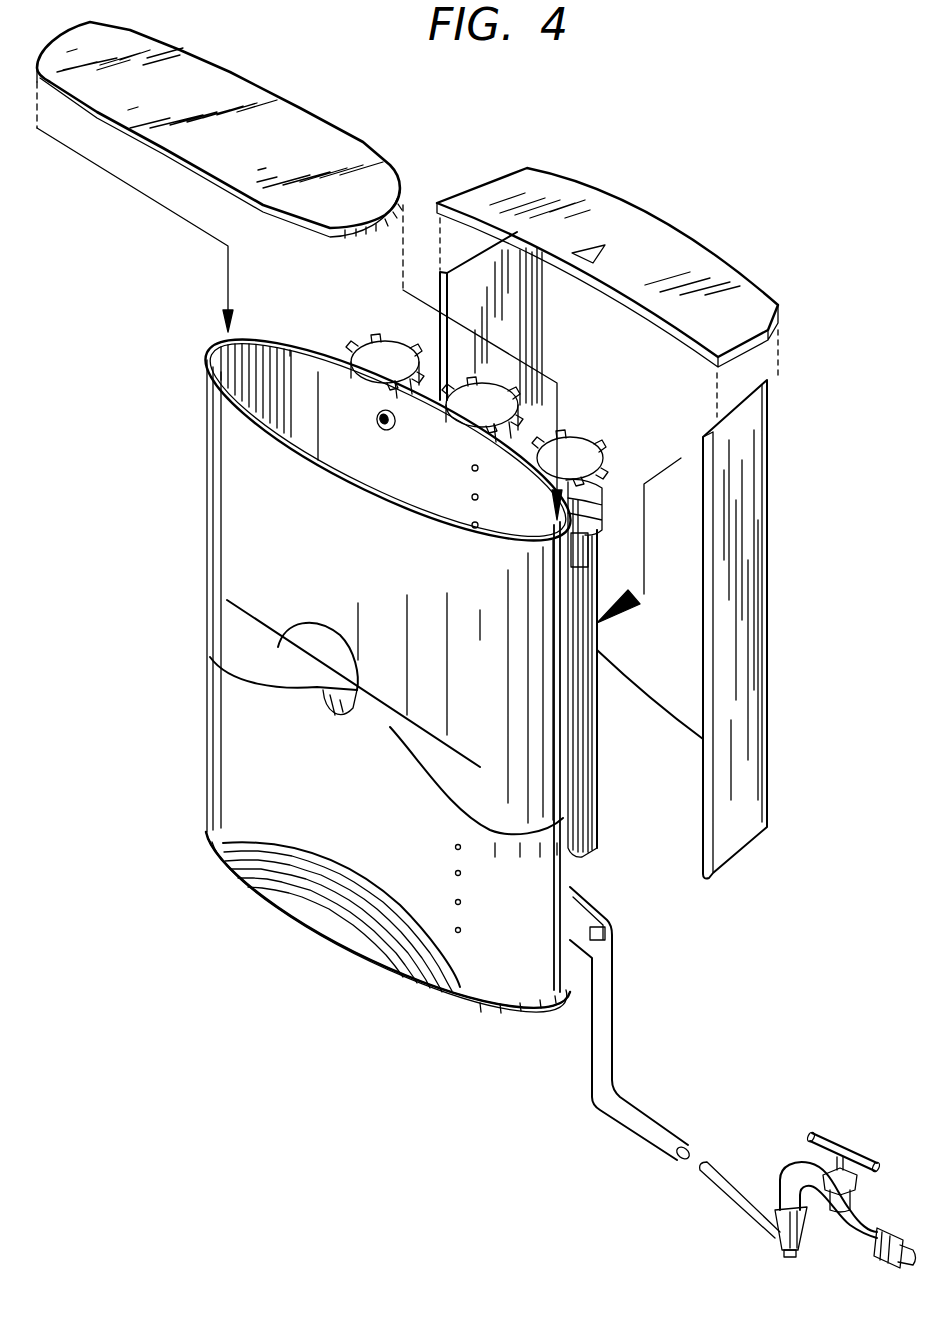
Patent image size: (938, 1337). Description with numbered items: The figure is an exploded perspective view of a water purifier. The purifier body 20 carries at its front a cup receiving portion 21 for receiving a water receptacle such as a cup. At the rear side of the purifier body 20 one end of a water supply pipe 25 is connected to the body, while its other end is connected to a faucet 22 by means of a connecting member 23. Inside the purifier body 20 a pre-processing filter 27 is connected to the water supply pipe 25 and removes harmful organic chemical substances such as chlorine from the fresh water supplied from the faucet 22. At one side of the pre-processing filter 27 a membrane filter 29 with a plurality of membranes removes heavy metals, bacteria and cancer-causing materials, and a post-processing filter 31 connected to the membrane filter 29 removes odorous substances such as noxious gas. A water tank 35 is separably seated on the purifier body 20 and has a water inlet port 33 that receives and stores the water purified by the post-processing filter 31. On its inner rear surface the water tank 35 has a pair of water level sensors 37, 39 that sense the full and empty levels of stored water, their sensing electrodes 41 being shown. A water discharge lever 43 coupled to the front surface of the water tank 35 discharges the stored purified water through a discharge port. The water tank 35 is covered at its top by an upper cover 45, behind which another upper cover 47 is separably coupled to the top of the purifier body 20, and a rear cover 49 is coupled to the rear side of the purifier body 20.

The purifier body 20 is at (523, 1037).
The cup receiving portion 21 is at (232, 850).
The faucet 22 is at (847, 1233).
The connecting member 23 is at (790, 1230).
The water supply pipe 25 is at (627, 1117).
The pre-processing filter 27 is at (573, 857).
The membrane filter 29 is at (470, 403).
The post-processing filter 31 is at (363, 353).
The water inlet port 33 is at (377, 415).
The water tank 35 is at (232, 512).
The water level sensor 37 is at (470, 470).
The water level sensor 39 is at (470, 498).
The sensing electrodes 41 is at (470, 527).
The water discharge lever 43 is at (317, 693).
The upper cover 45 is at (303, 123).
The upper cover 47 is at (700, 237).
The rear cover 49 is at (768, 484).